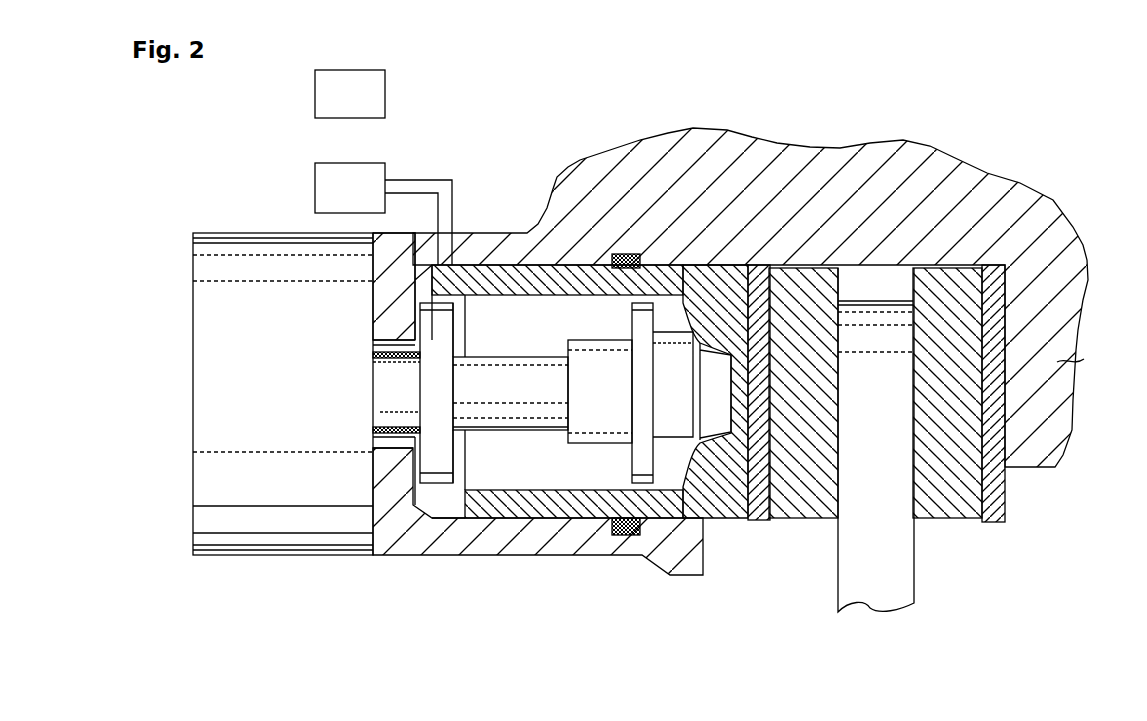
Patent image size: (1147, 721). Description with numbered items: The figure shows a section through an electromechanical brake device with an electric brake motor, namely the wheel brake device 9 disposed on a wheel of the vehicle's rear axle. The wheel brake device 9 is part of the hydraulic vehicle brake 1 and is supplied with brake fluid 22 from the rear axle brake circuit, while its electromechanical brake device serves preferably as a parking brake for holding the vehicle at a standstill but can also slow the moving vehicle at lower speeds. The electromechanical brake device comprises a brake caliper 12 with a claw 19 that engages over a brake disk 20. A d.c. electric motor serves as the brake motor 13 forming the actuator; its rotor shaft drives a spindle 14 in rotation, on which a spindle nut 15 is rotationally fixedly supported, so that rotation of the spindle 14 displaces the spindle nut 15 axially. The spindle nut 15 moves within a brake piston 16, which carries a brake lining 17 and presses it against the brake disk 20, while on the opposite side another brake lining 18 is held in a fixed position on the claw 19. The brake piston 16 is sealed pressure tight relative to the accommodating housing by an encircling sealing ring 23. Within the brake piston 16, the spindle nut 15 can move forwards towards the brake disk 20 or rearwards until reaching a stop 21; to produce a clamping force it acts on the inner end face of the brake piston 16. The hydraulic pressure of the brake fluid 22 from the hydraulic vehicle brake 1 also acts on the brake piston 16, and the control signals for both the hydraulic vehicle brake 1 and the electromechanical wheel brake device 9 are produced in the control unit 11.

The hydraulic vehicle brake 1 is at (314, 186).
The wheel brake device 9 is at (1006, 140).
The control unit 11 is at (314, 93).
The brake caliper 12 is at (798, 160).
The brake motor 13 is at (290, 540).
The spindle 14 is at (543, 430).
The spindle nut 15 is at (583, 445).
The brake piston 16 is at (503, 507).
The brake lining 17 is at (800, 500).
The brake lining 18 is at (946, 505).
The claw 19 is at (1082, 360).
The brake disk 20 is at (872, 597).
The stop 21 is at (432, 483).
The brake fluid 22 is at (453, 507).
The sealing ring 23 is at (622, 535).